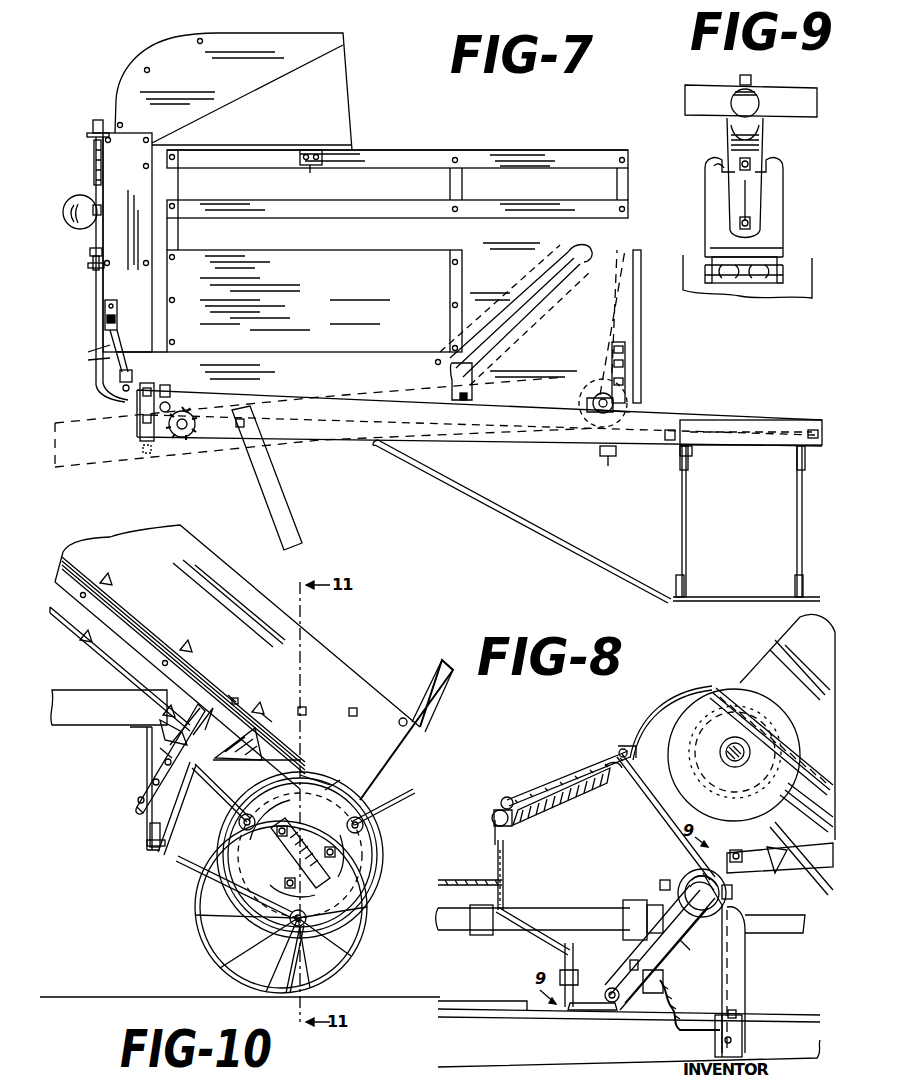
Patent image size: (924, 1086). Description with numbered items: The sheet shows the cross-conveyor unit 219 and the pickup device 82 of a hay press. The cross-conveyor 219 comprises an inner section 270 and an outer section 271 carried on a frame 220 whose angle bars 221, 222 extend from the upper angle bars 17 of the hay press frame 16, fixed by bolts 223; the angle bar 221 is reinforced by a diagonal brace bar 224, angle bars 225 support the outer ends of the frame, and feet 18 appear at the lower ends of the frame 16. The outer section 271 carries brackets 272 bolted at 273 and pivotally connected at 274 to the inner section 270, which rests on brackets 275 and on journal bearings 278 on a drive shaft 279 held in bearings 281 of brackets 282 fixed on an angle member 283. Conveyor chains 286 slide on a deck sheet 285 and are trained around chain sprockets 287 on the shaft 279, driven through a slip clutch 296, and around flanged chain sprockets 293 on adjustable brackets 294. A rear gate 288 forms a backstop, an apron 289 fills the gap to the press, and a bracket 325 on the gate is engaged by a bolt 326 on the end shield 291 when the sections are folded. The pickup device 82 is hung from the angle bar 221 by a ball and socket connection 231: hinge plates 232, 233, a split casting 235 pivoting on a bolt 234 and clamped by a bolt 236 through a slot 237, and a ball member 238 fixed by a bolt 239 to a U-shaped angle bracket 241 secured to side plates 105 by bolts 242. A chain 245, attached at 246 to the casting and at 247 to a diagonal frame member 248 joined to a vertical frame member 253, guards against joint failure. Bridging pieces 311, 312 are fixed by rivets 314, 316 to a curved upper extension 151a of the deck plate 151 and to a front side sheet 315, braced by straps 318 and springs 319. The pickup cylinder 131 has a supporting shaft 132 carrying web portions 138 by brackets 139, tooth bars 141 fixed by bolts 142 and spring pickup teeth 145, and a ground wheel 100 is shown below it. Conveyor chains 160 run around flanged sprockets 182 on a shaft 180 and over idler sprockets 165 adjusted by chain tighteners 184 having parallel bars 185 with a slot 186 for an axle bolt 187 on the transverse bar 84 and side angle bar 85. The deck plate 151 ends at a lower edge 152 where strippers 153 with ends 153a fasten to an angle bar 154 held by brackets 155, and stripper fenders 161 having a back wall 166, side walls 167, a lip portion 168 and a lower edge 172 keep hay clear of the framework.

In FIG. 7, the cross-conveyor unit 219 is at (149, 56).
In FIG. 8, the cross-conveyor unit 219 is at (490, 847).
In FIG. 7, the end shield 291 is at (282, 70).
In FIG. 7, the outer section 271 is at (88, 117).
In FIG. 7, the flanged chain sprockets 293 is at (86, 203).
In FIG. 7, the adjustable brackets 294 is at (88, 257).
In FIG. 7, the conveyor chains 286 is at (92, 310).
In FIG. 7, the bolted connection 273 is at (116, 318).
In FIG. 7, the brackets 272 is at (96, 360).
In FIG. 7, the pivotal connection 274 is at (135, 378).
In FIG. 7, the brackets 275 is at (138, 409).
In FIG. 8, the brackets 275 is at (530, 930).
In FIG. 7, the frame 220 is at (236, 440).
In FIG. 7, the angle bars 225 is at (272, 488).
In FIG. 7, the bolt 326 is at (316, 152).
In FIG. 7, the bracket 325 is at (316, 168).
In FIG. 7, the rear gate 288 is at (411, 159).
In FIG. 7, the inner section 270 is at (505, 150).
In FIG. 7, the apron 289 is at (604, 304).
In FIG. 7, the bearings 281 is at (605, 382).
In FIG. 7, the drive shaft 279 is at (590, 399).
In FIG. 8, the drive shaft 279 is at (582, 914).
In FIG. 7, the journal bearings 278 is at (590, 413).
In FIG. 8, the journal bearings 278 is at (480, 935).
In FIG. 7, the chain sprockets 287 is at (633, 412).
In FIG. 7, the brackets 282 is at (614, 435).
In FIG. 7, the angle member 283 is at (606, 458).
In FIG. 7, the angle bar 221 is at (480, 437).
In FIG. 9, the angle bar 221 is at (768, 300).
In FIG. 8, the angle bar 221 is at (560, 958).
In FIG. 7, the bolts 223 is at (678, 438).
In FIG. 7, the angle bar 222 is at (732, 437).
In FIG. 7, the upper angle bars 17 is at (688, 466).
In FIG. 8, the upper angle bars 17 is at (553, 1037).
In FIG. 7, the hay press frame 16 is at (757, 526).
In FIG. 7, the frame foot 18 is at (680, 584).
In FIG. 7, the diagonal brace bar 224 is at (560, 552).
In FIG. 9, the bolt 239 is at (738, 79).
In FIG. 8, the bolt 239 is at (717, 847).
In FIG. 9, the ball member 238 is at (732, 103).
In FIG. 8, the ball member 238 is at (734, 893).
In FIG. 9, the U-shaped angle bracket 241 is at (770, 105).
In FIG. 8, the U-shaped angle bracket 241 is at (775, 830).
In FIG. 9, the ball and socket connection 231 is at (712, 136).
In FIG. 8, the ball and socket connection 231 is at (680, 878).
In FIG. 9, the slot 237 is at (714, 174).
In FIG. 9, the bolt 236 is at (752, 172).
In FIG. 8, the bolt 236 is at (662, 882).
In FIG. 9, the split casting 235 is at (742, 202).
In FIG. 8, the split casting 235 is at (689, 948).
In FIG. 9, the hinge plate 233 is at (743, 207).
In FIG. 8, the hinge plate 233 is at (676, 968).
In FIG. 9, the bolt 234 is at (775, 228).
In FIG. 8, the bolt 234 is at (630, 966).
In FIG. 9, the hinge plate 232 is at (766, 272).
In FIG. 8, the hinge plate 232 is at (610, 988).
In FIG. 10, the side plates 105 is at (323, 658).
In FIG. 8, the side plates 105 is at (812, 670).
In FIG. 10, the pickup device 82 is at (372, 672).
In FIG. 10, the deck plate 151 is at (150, 633).
In FIG. 8, the deck plate 151 is at (768, 760).
In FIG. 8, the curved upper extension 151a is at (660, 710).
In FIG. 10, the conveyor chains 160 is at (122, 595).
In FIG. 8, the conveyor chains 160 is at (806, 888).
In FIG. 10, the lower edge 152 is at (229, 694).
In FIG. 10, the lip portion 168 is at (238, 698).
In FIG. 10, the side walls 167 is at (258, 716).
In FIG. 10, the stripper fender 161 is at (271, 738).
In FIG. 10, the back wall 166 is at (262, 736).
In FIG. 10, the side angle bar 85 is at (105, 710).
In FIG. 10, the chain tightener 184 is at (163, 720).
In FIG. 10, the transverse bar 84 is at (208, 715).
In FIG. 10, the axle bolt 187 is at (162, 740).
In FIG. 10, the takeup adjustment idler sprockets 165 is at (165, 760).
In FIG. 10, the slot 186 is at (150, 784).
In FIG. 10, the lower edge 172 is at (196, 778).
In FIG. 10, the parallel bars 185 is at (135, 800).
In FIG. 10, the brackets 155 is at (145, 828).
In FIG. 10, the angle bar 154 is at (150, 845).
In FIG. 10, the stripper ends 153a is at (205, 875).
In FIG. 10, the strippers 153 is at (316, 780).
In FIG. 10, the web portions 138 is at (332, 786).
In FIG. 10, the pickup cylinder 131 is at (388, 867).
In FIG. 10, the wheel 100 is at (200, 948).
In FIG. 10, the cylinder tooth bars 141 is at (247, 813).
In FIG. 10, the bolts 142 is at (281, 822).
In FIG. 10, the supporting shaft 132 is at (305, 855).
In FIG. 10, the brackets 139 is at (288, 877).
In FIG. 10, the spring pickup teeth 145 is at (210, 803).
In FIG. 8, the shaft 180 is at (735, 747).
In FIG. 8, the flanged sprockets 182 is at (678, 777).
In FIG. 8, the rivets 314 is at (622, 748).
In FIG. 8, the overlapping piece 311 is at (572, 768).
In FIG. 8, the overlapping piece 312 is at (545, 783).
In FIG. 8, the rivets 316 is at (508, 796).
In FIG. 8, the spring 319 is at (552, 803).
In FIG. 8, the straps 318 is at (650, 808).
In FIG. 8, the bolts 242 is at (798, 796).
In FIG. 8, the slip clutch 296 is at (650, 902).
In FIG. 8, the front side sheet 315 is at (500, 874).
In FIG. 8, the deck sheet 285 is at (458, 884).
In FIG. 8, the chain connection 246 is at (655, 992).
In FIG. 8, the chain 245 is at (672, 1036).
In FIG. 8, the chain connection 247 is at (729, 1017).
In FIG. 8, the diagonal frame member 248 is at (742, 985).
In FIG. 8, the vertical frame member 253 is at (714, 1030).